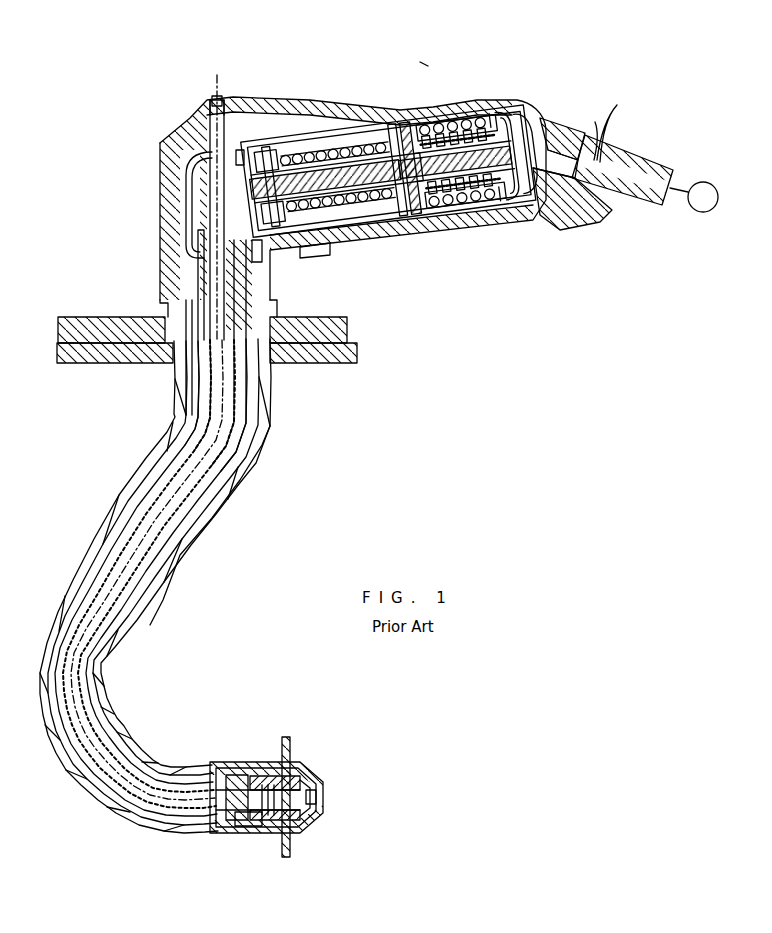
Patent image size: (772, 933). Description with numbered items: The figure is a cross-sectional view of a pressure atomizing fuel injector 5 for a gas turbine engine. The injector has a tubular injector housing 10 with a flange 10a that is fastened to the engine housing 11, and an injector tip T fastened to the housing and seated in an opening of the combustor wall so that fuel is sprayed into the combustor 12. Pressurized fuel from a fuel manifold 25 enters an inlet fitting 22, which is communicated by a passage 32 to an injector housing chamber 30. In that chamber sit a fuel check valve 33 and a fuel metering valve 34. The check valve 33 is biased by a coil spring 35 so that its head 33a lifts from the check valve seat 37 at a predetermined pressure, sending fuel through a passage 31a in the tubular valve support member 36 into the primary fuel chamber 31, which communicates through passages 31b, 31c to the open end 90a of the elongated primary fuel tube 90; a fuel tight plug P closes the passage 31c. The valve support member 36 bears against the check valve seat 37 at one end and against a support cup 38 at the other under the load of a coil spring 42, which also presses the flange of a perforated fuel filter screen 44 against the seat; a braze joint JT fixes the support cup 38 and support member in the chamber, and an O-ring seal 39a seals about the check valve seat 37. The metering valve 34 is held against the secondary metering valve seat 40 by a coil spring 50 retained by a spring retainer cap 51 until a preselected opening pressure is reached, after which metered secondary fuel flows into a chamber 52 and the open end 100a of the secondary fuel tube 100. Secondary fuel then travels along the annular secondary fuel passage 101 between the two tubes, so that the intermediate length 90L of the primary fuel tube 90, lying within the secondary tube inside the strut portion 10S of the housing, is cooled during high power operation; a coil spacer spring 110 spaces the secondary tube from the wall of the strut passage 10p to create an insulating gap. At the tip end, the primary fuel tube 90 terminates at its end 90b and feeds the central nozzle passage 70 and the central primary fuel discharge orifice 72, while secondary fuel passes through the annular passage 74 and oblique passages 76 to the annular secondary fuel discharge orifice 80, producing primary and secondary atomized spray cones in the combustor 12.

The pressure atomizing fuel injector 5 is at (425, 58).
The injector housing 10 is at (150, 270).
The flange 10a is at (345, 325).
The passage 10p is at (190, 545).
The strut portion 10S is at (152, 462).
The engine housing 11 is at (345, 362).
The combustor 12 is at (311, 797).
The inlet fitting 22 is at (603, 200).
The fuel manifold 25 is at (706, 212).
The injector housing chamber 30 is at (543, 145).
The primary fuel chamber 31 is at (390, 225).
The passage 31a is at (350, 150).
The passage 31b is at (280, 112).
The passage 31c is at (215, 118).
The passage 32 is at (598, 160).
The fuel check valve 33 is at (478, 110).
The head 33a is at (380, 165).
The fuel metering valve 34 is at (338, 130).
The coil spring 35 is at (520, 95).
The valve support member 36 is at (370, 238).
The check valve seat 37 is at (430, 215).
The support cup 38 is at (262, 245).
The O-ring seal 39a is at (430, 105).
The secondary metering valve seat 40 is at (232, 150).
The coil spring 42 is at (500, 212).
The fuel filter screen 44 is at (495, 232).
The coil spring 50 is at (320, 105).
The spring retainer cap 51 is at (420, 232).
The chamber 52 is at (195, 205).
The central nozzle passage 70 is at (272, 834).
The central primary fuel discharge orifice 72 is at (318, 796).
The annular passage 74 is at (232, 834).
The oblique passages 76 is at (222, 772).
The annular secondary fuel discharge orifice 80 is at (320, 806).
The primary fuel tube 90 is at (205, 188).
The open end 90a is at (207, 125).
The pipe lower end 90b is at (246, 772).
The intermediate length 90L is at (235, 445).
The secondary fuel tube 100 is at (195, 415).
The open end 100a is at (205, 230).
The annular secondary fuel passage 101 is at (200, 360).
The coil spacer spring 110 is at (212, 505).
The braze joint JT is at (356, 262).
The fuel tight plug P is at (221, 198).
The injector tip T is at (313, 738).